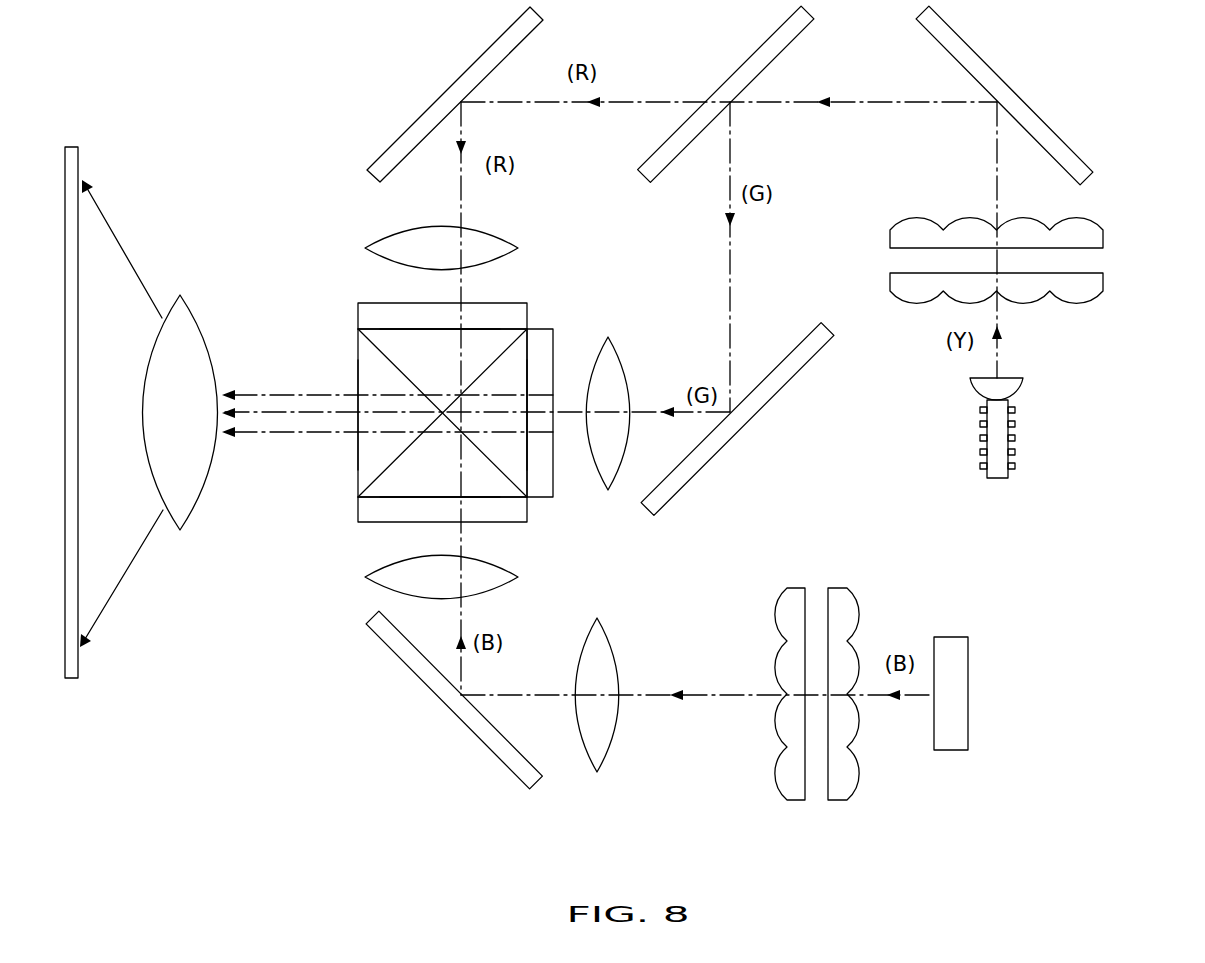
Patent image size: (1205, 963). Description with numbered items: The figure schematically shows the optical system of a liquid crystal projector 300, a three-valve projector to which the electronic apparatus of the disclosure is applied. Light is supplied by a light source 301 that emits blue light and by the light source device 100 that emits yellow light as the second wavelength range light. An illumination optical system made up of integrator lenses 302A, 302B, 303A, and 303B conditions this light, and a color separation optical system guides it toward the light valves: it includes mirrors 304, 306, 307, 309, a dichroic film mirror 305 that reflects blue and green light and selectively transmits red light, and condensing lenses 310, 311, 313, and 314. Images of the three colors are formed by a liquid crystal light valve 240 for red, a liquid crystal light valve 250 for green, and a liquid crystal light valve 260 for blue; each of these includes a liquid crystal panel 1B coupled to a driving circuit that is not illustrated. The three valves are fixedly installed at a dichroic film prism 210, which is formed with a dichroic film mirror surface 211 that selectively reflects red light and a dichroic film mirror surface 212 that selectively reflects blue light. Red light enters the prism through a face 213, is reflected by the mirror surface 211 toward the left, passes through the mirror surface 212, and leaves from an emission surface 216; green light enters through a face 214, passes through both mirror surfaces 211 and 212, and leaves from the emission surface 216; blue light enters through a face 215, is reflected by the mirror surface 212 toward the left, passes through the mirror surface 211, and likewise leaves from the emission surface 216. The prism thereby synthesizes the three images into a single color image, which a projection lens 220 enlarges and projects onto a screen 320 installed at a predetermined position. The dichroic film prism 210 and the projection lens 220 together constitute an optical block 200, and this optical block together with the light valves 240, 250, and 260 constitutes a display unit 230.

The light source device 100 is at (997, 482).
The optical block 200 is at (223, 550).
The dichroic film prism 210 is at (434, 415).
The dichroic film mirror surface 211 is at (395, 458).
The dichroic film mirror surface 212 is at (382, 352).
The face 213 is at (397, 330).
The face 214 is at (520, 460).
The face 215 is at (387, 493).
The emission surface 216 is at (358, 383).
The projection lens 220 is at (185, 325).
The display unit 230 is at (535, 263).
The liquid crystal light valve 240 is at (362, 317).
The liquid crystal light valve 250 is at (543, 340).
The liquid crystal light valve 260 is at (522, 520).
The liquid crystal panel 1B is at (387, 313).
The liquid crystal projector 300 is at (1117, 82).
The light source 301 is at (950, 637).
The integrator lens 302A is at (1092, 286).
The integrator lens 302B is at (1092, 238).
The integrator lens 303A is at (842, 605).
The integrator lens 303B is at (793, 607).
The mirror 304 is at (975, 63).
The dichroic film mirror 305 is at (750, 63).
The mirror 306 is at (475, 63).
The mirror 307 is at (782, 368).
The mirror 309 is at (420, 673).
The condensing lens 310 is at (393, 243).
The condensing lens 311 is at (613, 370).
The condensing lens 313 is at (602, 747).
The condensing lens 314 is at (388, 585).
The screen 320 is at (72, 678).